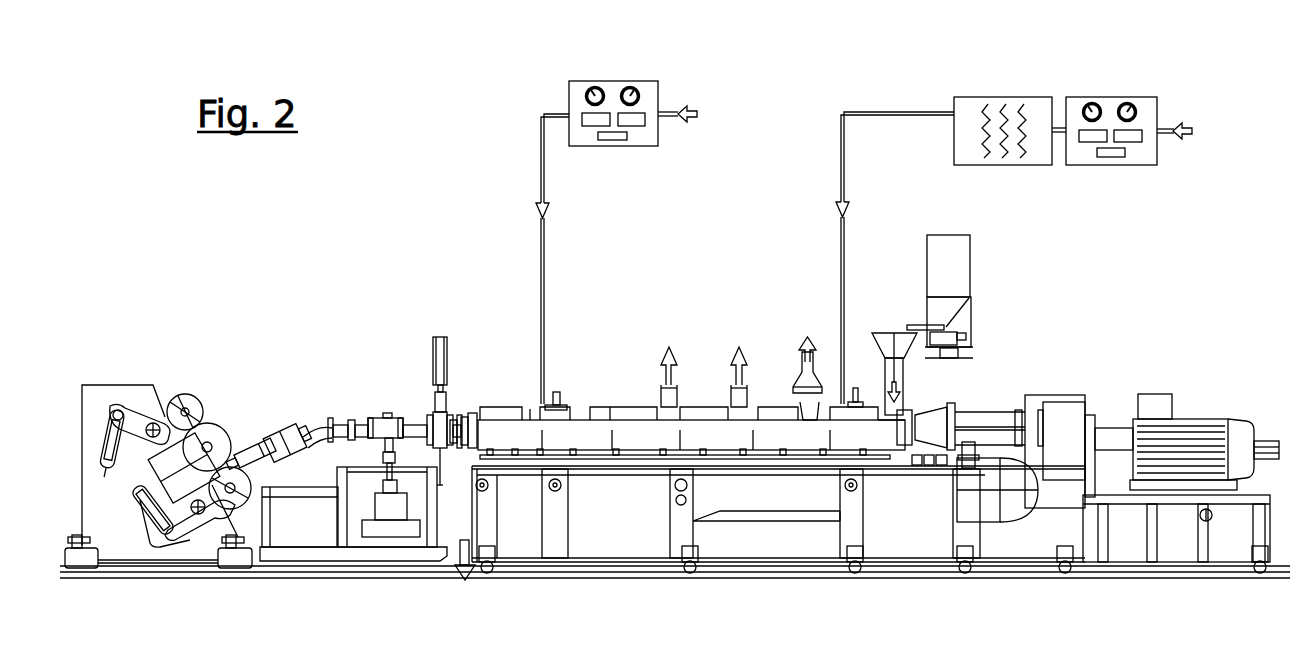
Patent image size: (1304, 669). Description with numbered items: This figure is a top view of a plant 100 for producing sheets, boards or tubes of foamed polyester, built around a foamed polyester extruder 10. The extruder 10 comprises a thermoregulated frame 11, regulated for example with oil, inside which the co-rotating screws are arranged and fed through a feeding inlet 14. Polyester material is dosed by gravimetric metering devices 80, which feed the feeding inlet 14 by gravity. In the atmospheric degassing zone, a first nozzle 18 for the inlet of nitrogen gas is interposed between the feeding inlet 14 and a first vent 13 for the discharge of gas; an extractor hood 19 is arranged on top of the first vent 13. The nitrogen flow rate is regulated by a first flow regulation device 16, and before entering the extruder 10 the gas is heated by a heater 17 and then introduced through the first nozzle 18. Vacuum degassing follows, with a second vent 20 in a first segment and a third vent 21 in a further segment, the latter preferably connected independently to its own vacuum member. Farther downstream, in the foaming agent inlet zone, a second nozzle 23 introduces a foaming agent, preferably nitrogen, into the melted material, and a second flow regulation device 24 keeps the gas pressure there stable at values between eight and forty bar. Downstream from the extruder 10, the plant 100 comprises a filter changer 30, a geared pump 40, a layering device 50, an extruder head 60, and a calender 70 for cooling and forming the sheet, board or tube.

The plant 100 is at (229, 292).
The foamed polyester extruder 10 is at (660, 304).
The thermoregulated frame 11 is at (707, 430).
The first vent 13 is at (803, 400).
The feeding inlet 14 is at (902, 348).
The first flow regulation device 16 is at (1107, 97).
The heater 17 is at (1000, 97).
The first nozzle 18 is at (857, 398).
The extractor hood 19 is at (800, 388).
The second vent 20 is at (731, 388).
The third vent 21 is at (661, 390).
The second nozzle 23 is at (558, 394).
The second flow regulation device 24 is at (610, 81).
The filter changer 30 is at (438, 337).
The geared pump 40 is at (386, 413).
The layering device 50 is at (291, 430).
The extruder head 60 is at (248, 446).
The calender 70 is at (190, 398).
The gravimetric metering devices 80 is at (958, 271).